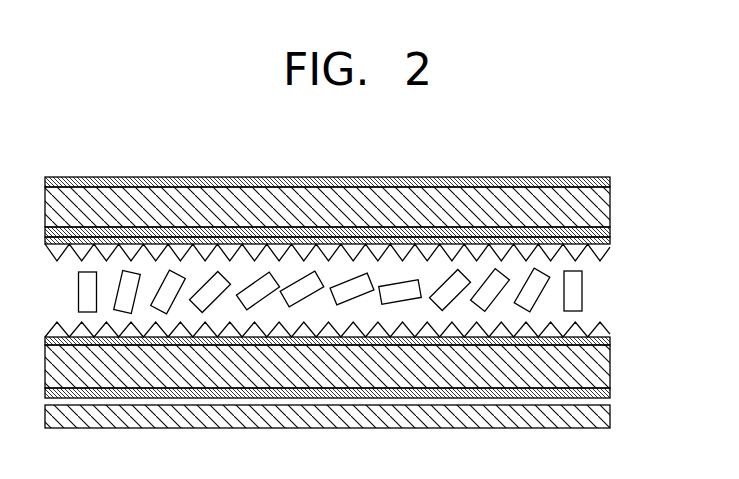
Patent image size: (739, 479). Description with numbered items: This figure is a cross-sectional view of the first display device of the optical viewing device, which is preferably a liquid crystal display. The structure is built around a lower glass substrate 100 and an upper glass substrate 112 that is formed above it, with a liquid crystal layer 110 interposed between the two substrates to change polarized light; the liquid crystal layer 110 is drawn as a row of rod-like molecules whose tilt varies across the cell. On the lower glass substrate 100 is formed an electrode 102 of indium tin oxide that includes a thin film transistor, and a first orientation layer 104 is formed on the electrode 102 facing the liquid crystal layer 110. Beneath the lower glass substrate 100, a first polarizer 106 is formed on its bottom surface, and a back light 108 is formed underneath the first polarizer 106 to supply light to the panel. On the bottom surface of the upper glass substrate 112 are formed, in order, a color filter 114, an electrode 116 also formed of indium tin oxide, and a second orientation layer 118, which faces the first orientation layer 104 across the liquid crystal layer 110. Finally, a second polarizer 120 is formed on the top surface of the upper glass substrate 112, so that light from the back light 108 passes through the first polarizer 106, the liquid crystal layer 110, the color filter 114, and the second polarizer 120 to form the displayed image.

The lower glass substrate 100 is at (610, 368).
The electrode 102 is at (610, 343).
The first orientation layer 104 is at (608, 333).
The first polarizer 106 is at (610, 394).
The back light 108 is at (610, 418).
The liquid crystal layer 110 is at (608, 295).
The upper glass substrate 112 is at (610, 207).
The color filter 114 is at (610, 232).
The electrode 116 is at (610, 244).
The second orientation layer 118 is at (603, 256).
The second polarizer 120 is at (610, 180).